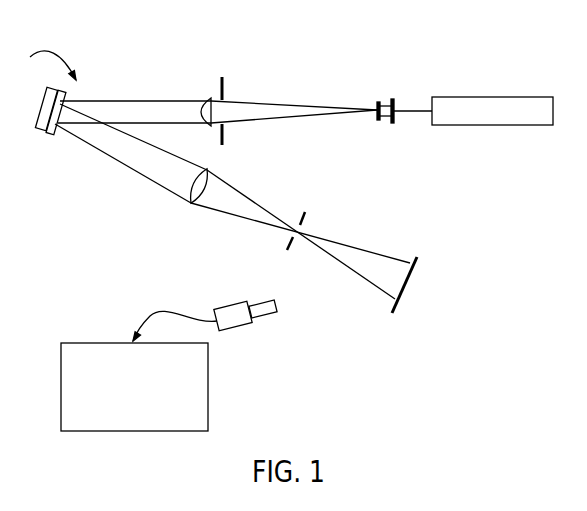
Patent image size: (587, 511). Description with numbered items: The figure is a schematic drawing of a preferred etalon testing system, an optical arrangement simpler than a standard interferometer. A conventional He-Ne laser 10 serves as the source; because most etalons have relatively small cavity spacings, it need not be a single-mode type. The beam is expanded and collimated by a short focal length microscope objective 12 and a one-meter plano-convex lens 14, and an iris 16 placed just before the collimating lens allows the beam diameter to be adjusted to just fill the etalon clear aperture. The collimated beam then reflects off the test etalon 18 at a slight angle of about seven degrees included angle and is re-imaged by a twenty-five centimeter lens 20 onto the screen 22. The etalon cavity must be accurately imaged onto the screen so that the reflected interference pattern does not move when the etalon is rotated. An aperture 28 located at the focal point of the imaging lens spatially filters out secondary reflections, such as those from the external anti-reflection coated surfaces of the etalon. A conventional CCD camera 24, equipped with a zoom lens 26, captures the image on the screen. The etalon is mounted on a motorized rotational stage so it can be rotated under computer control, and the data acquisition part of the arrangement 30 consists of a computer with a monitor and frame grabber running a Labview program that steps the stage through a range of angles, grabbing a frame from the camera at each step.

The He-Ne laser 10 is at (455, 92).
The microscope objective 12 is at (383, 92).
The plano-convex lens 14 is at (199, 87).
The iris 16 is at (228, 87).
The test etalon 18 is at (90, 80).
The lens 20 is at (221, 167).
The screen 22 is at (428, 265).
The CCD camera 24 is at (213, 295).
The zoom lens 26 is at (262, 297).
The aperture 28 is at (313, 216).
The data acquisition part 30 is at (208, 387).